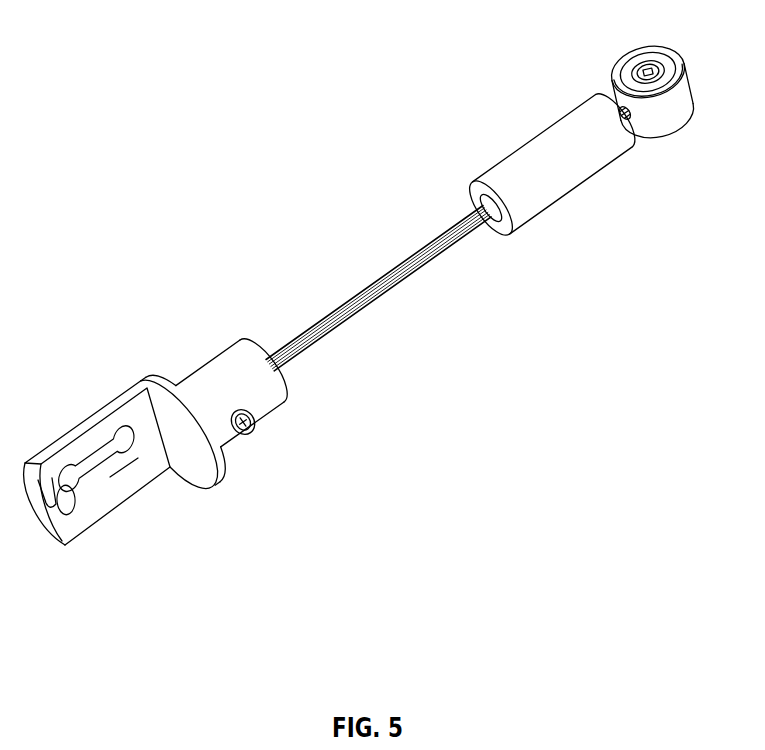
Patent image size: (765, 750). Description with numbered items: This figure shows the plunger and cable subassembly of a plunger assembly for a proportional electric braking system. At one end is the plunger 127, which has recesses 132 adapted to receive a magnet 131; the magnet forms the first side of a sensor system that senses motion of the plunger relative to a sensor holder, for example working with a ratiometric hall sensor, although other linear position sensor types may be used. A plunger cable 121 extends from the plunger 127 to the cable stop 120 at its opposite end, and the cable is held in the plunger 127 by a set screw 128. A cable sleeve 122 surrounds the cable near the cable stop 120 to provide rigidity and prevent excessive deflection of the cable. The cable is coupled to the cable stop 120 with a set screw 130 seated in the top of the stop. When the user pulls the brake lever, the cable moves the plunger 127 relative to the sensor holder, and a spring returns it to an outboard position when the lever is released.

The cable stop 120 is at (677, 133).
The cable 121 is at (398, 285).
The cable sleeve 122 is at (520, 147).
The plunger 127 is at (121, 388).
The set screw 128 is at (250, 437).
The set screw 130 is at (628, 64).
The magnet 131 is at (70, 498).
The recesses 132 is at (107, 432).